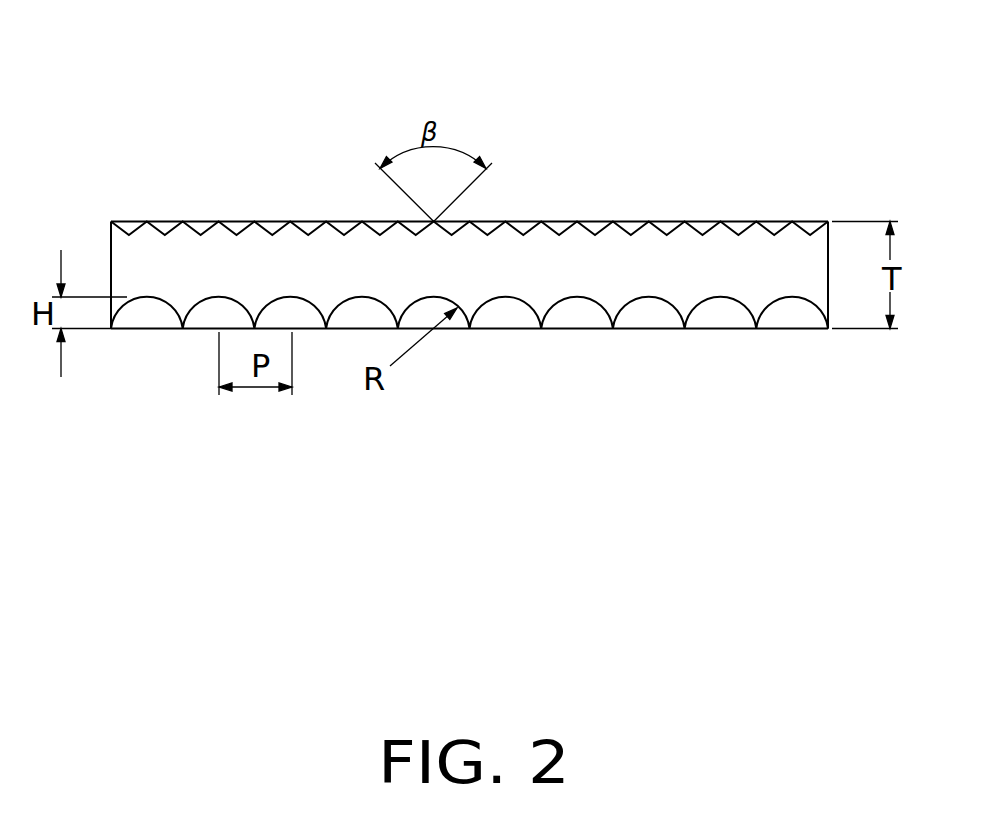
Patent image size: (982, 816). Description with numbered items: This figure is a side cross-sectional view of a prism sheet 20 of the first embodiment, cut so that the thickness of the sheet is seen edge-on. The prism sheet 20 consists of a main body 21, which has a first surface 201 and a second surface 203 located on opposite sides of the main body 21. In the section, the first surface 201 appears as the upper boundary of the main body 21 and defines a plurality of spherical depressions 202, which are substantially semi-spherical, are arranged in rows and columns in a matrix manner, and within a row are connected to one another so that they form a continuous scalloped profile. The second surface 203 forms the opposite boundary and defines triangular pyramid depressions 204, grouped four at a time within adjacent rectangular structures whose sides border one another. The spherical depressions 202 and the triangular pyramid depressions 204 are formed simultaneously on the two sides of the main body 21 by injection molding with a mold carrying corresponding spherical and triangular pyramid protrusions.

The prism sheet 20 is at (376, 97).
The main body 21 is at (123, 258).
The first surface 201 is at (686, 329).
The spherical depressions 202 is at (722, 316).
The second surface 203 is at (802, 221).
The triangular pyramid depressions 204 is at (737, 236).